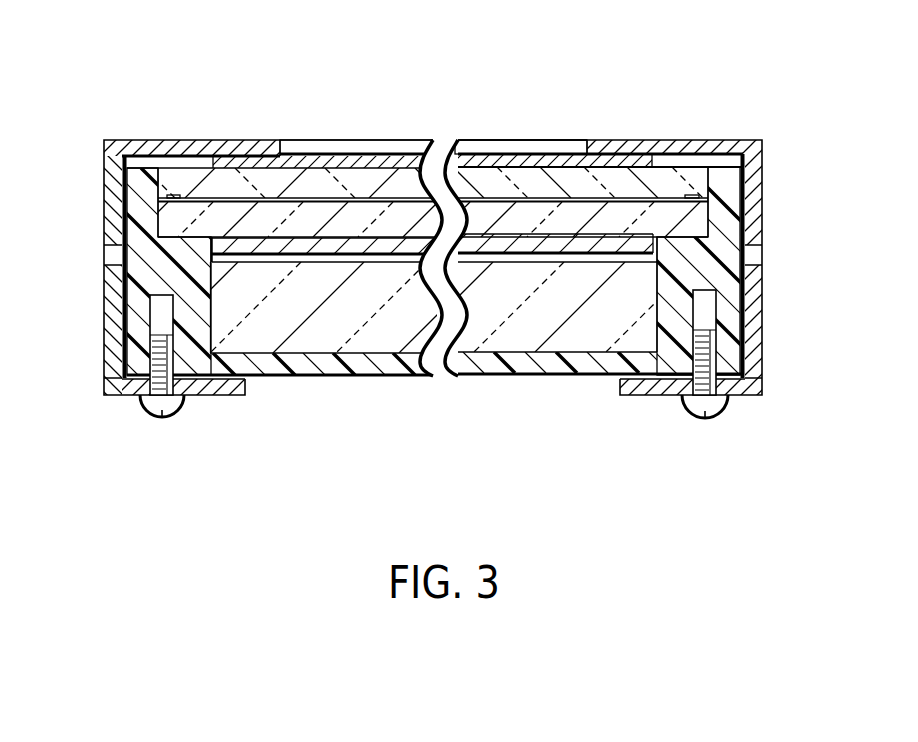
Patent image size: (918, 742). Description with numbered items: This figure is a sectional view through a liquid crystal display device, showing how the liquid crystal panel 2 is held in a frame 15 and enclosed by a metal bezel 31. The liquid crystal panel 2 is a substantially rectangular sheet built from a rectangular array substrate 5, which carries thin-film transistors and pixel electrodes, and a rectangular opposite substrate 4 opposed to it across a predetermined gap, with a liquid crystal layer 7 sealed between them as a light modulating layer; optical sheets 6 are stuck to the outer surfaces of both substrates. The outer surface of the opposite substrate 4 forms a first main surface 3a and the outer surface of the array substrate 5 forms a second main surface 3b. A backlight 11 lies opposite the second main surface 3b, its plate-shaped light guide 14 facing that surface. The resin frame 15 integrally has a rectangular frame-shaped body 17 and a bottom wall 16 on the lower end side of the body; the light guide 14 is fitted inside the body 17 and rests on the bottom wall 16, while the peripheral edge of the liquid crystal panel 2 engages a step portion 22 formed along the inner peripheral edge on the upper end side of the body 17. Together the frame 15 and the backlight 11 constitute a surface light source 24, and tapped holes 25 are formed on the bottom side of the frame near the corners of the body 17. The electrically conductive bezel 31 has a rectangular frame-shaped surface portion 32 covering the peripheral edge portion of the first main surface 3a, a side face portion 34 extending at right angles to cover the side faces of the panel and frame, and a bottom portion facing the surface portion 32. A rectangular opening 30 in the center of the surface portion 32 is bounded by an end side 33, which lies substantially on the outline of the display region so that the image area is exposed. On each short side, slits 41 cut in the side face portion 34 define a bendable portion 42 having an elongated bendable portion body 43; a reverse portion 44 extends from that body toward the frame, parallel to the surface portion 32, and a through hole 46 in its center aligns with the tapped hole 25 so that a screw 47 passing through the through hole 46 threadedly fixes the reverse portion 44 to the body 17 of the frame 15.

The liquid crystal panel 2 is at (484, 142).
The first main surface 3a is at (345, 185).
The second main surface 3b is at (340, 265).
The opposite substrate 4 is at (294, 172).
The array substrate 5 is at (196, 167).
The optical sheets 6 is at (244, 165).
The liquid crystal layer 7 is at (403, 198).
The backlight 11 is at (525, 365).
The light guide 14 is at (388, 332).
The frame 15 is at (299, 387).
The bottom wall 16 is at (472, 376).
The body 17 is at (707, 277).
The step portion 22 is at (163, 167).
The surface light source 24 is at (572, 385).
The tapped hole 25 is at (150, 348).
The opening 30 is at (528, 138).
The bezel 31 is at (717, 125).
The surface portion 32 is at (123, 149).
The end side 33 is at (586, 156).
The side face portion 34 is at (106, 203).
The slits 41 is at (108, 251).
The bendable portion 42 is at (96, 299).
The bendable portion body 43 is at (106, 383).
The reverse portion 44 is at (240, 397).
The through hole 46 is at (180, 398).
The screw 47 is at (152, 413).